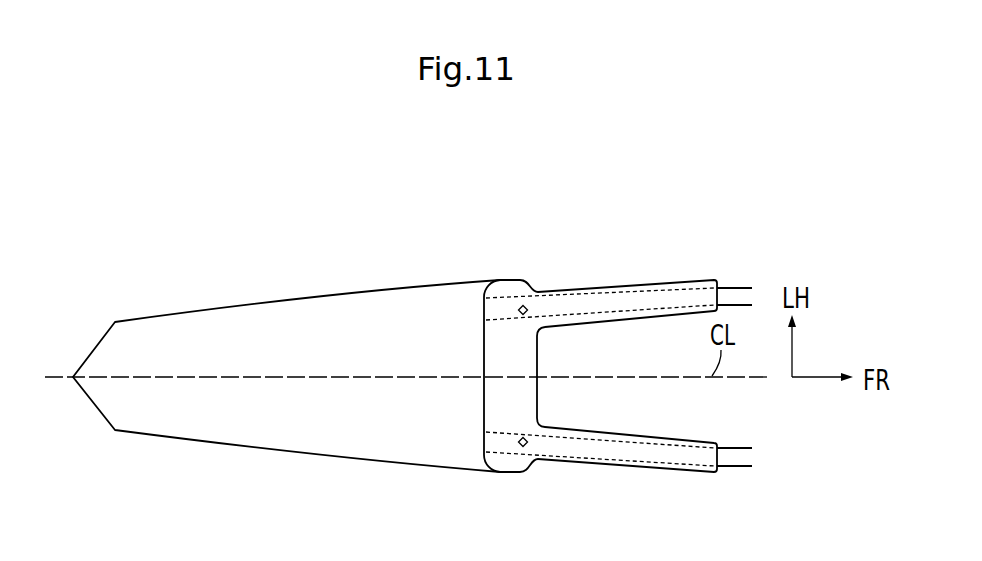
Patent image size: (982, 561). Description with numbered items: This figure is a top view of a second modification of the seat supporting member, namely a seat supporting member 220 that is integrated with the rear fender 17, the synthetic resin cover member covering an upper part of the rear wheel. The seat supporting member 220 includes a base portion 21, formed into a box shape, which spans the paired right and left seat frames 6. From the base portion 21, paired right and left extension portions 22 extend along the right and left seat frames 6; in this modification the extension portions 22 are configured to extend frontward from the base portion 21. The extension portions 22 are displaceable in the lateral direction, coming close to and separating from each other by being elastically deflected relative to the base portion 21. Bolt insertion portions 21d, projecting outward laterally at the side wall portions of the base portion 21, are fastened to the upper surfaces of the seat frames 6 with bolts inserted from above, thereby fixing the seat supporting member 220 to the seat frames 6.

The seat supporting member 220 is at (457, 224).
The rear fender 17 is at (310, 311).
The base portion 21 is at (528, 393).
The bolt insertion portions 21d is at (524, 305).
The extension portions 22 is at (667, 297).
The seat frames 6 is at (733, 292).